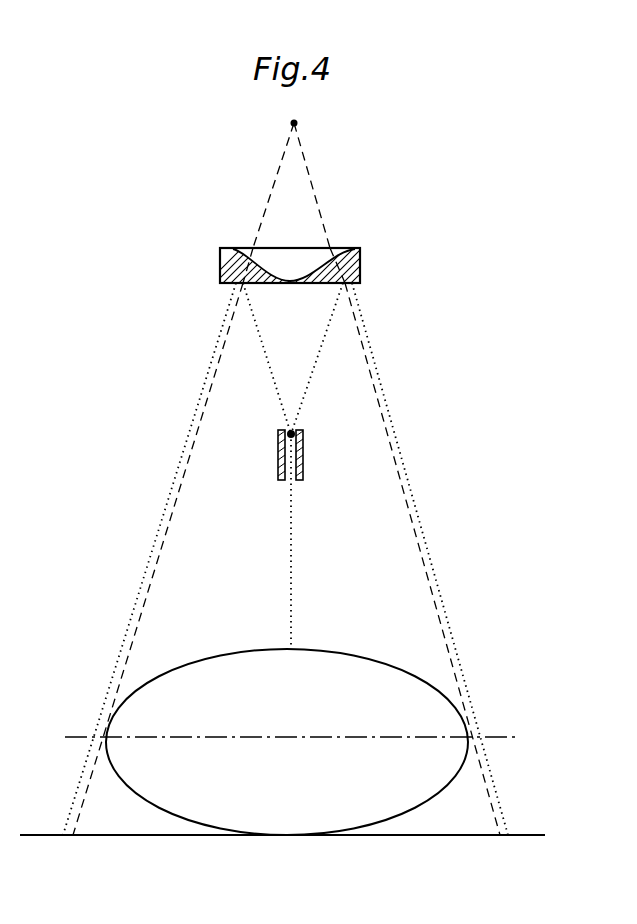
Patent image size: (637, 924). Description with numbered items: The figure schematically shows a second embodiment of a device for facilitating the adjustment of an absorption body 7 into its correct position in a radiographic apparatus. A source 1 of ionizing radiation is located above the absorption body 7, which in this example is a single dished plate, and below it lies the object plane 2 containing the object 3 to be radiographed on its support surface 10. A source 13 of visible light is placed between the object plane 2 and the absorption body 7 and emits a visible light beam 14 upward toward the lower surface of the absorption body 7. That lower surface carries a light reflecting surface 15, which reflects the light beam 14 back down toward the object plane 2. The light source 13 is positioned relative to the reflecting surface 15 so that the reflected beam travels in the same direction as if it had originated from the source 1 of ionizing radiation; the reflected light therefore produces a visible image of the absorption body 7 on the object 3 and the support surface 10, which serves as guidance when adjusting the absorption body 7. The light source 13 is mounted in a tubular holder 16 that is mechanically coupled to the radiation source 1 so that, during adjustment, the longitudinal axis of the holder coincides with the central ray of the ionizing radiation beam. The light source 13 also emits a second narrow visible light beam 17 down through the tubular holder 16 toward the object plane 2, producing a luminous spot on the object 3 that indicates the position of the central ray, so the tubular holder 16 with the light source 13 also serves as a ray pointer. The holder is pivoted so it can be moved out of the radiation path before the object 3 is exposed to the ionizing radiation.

The source of ionizing radiation 1 is at (299, 123).
The object plane 2 is at (500, 737).
The object 3 is at (350, 667).
The absorption body 7 is at (357, 266).
The support surface 10 is at (147, 836).
The source of visible light 13 is at (288, 428).
The visible light beam 14 is at (267, 367).
The light reflecting surface 15 is at (318, 284).
The tubular holder 16 is at (304, 461).
The second narrow visible light beam 17 is at (288, 578).